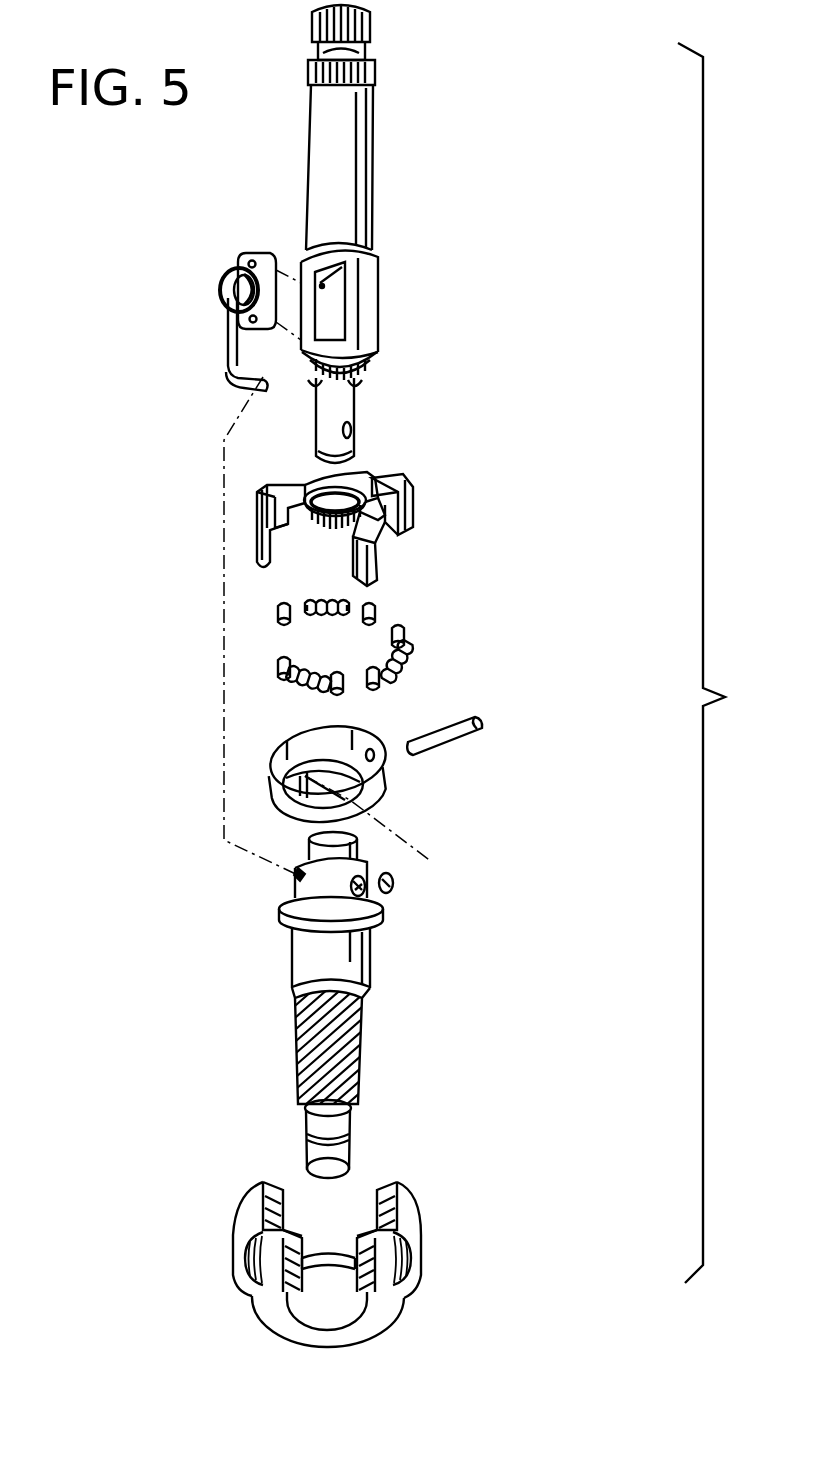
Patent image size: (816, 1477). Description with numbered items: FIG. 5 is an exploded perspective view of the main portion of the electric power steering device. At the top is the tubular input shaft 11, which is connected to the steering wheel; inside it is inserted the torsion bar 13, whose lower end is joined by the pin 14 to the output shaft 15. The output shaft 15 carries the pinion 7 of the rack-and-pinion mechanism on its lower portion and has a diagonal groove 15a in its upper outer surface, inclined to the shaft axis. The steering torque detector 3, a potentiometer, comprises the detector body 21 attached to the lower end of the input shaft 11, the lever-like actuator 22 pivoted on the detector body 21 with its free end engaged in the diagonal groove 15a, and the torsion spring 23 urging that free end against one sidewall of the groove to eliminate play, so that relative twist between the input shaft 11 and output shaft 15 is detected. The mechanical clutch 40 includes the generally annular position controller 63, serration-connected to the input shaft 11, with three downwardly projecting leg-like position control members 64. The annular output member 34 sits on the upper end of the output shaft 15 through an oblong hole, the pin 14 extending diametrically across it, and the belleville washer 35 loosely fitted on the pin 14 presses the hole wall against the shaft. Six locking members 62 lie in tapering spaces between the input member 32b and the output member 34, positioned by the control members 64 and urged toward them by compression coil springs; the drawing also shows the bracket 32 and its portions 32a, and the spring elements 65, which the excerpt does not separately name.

The steering torque detector 3 is at (119, 227).
The pinion 7 is at (365, 1075).
The tubular input shaft 11 is at (368, 170).
The torsion bar 13 is at (356, 408).
The pin 14 is at (462, 737).
The output shaft 15 is at (372, 975).
The diagonal groove 15a is at (300, 875).
The detector body 21 is at (232, 268).
The lever-like actuator 22 is at (228, 347).
The torsion spring 23 is at (226, 297).
The bracket 32 is at (404, 1303).
The threaded hole 32a is at (405, 1270).
The input member 32b is at (415, 1213).
The output member 34 is at (380, 772).
The belleville washer 35 is at (400, 886).
The mechanical clutch 40 is at (542, 427).
The locking members 62 is at (380, 610).
The position controller 63 is at (355, 478).
The position control members 64 is at (408, 517).
The springs 65 is at (322, 598).